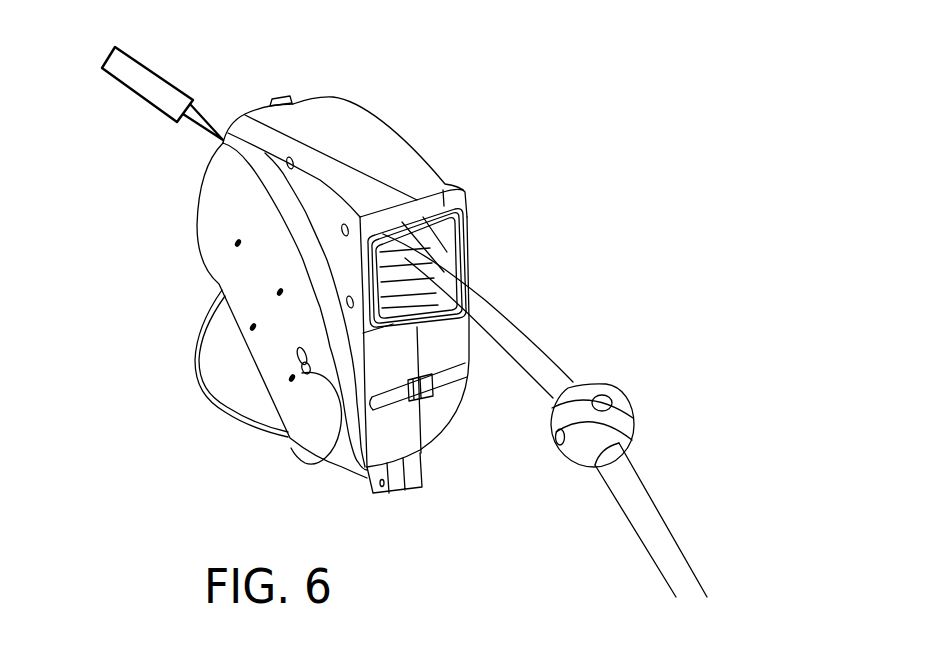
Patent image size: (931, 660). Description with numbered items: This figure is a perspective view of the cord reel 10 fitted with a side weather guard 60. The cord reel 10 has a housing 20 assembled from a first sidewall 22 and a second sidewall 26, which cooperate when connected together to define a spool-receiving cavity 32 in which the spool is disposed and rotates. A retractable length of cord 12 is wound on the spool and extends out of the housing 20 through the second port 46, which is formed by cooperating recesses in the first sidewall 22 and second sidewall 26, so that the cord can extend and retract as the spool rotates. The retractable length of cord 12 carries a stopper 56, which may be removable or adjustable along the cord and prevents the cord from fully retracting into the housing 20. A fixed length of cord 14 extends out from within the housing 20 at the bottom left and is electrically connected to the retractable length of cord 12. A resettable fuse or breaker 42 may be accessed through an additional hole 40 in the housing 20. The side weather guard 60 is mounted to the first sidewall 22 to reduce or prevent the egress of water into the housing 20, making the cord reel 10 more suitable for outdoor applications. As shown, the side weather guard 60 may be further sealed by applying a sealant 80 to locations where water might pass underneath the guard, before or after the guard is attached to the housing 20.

The cord reel 10 is at (522, 107).
The retractable length of cord 12 is at (473, 312).
The fixed length of cord 14 is at (235, 426).
The housing 20 is at (437, 430).
The first sidewall 22 is at (250, 113).
The second sidewall 26 is at (340, 112).
The spool-receiving cavity 32 is at (393, 270).
The additional hole 40 is at (342, 440).
The resettable fuse or breaker 42 is at (300, 373).
The second port 46 is at (442, 212).
The stopper 56 is at (587, 382).
The side weather guard 60 is at (225, 200).
The sealant 80 is at (127, 87).